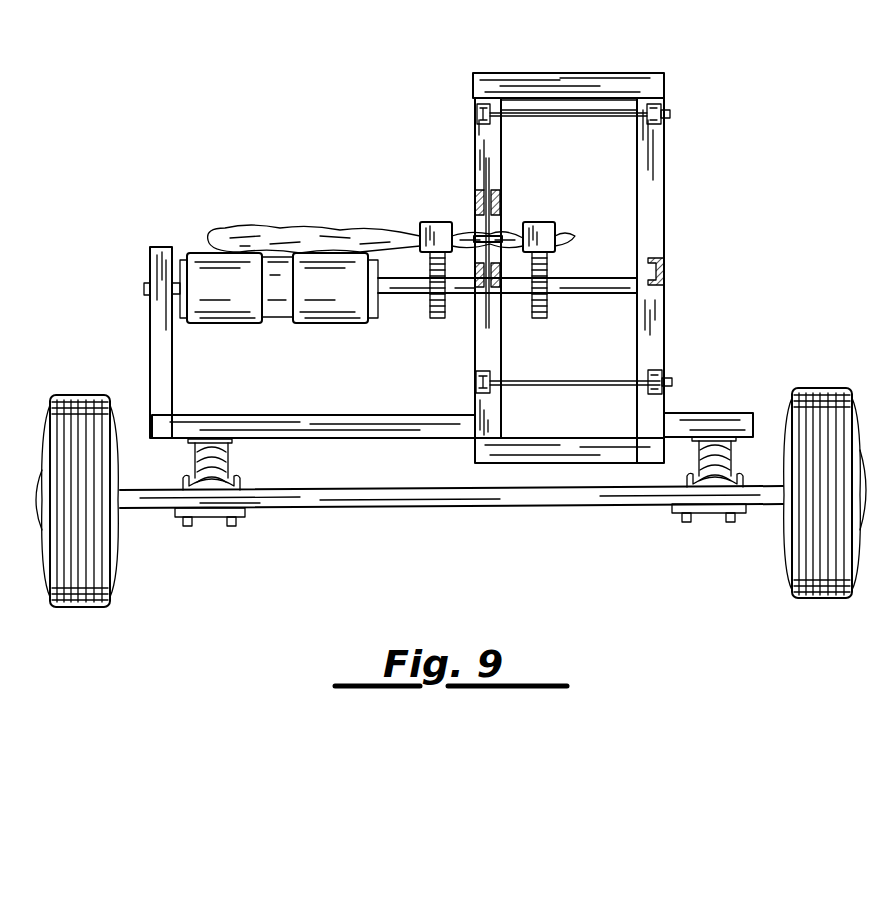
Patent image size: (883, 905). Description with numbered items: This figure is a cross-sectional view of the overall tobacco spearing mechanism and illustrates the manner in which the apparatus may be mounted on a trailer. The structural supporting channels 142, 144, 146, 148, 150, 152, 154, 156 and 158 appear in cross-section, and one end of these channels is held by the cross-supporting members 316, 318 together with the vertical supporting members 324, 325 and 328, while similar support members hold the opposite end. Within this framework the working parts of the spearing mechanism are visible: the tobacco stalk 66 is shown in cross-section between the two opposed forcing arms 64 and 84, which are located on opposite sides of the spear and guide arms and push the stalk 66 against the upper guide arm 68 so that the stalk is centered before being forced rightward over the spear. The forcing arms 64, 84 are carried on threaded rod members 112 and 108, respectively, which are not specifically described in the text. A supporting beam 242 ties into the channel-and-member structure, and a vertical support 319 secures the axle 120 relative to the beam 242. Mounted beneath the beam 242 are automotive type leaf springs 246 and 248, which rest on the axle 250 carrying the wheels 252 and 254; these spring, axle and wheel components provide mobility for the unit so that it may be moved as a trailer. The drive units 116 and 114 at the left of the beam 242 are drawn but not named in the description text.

The cross-supporting member 316 is at (558, 73).
The vertical supporting member 324 is at (475, 120).
The vertical supporting member 325 is at (476, 360).
The vertical supporting member 328 is at (664, 205).
The structural supporting channel 142 is at (477, 108).
The structural supporting channel 144 is at (661, 108).
The structural supporting channel 146 is at (476, 383).
The structural supporting channel 148 is at (664, 372).
The structural supporting channel 150 is at (692, 270).
The structural supporting channel 152 is at (478, 190).
The structural supporting channel 154 is at (497, 190).
The structural supporting channel 156 is at (476, 290).
The structural supporting channel 158 is at (500, 290).
The upper guide arm 68 is at (494, 232).
The tobacco stalk 66 is at (238, 225).
The forcing arm 84 is at (430, 222).
The forcing arm 64 is at (545, 222).
The left threaded rod 112 is at (428, 312).
The right threaded rod 108 is at (548, 312).
The vertical support 319 is at (150, 330).
The axle 120 is at (144, 290).
The motor housing 116 is at (228, 325).
The gear reducer housing 114 is at (328, 325).
The supporting beam 242 is at (300, 415).
The cross-supporting member 318 is at (482, 464).
The leaf spring 246 is at (232, 463).
The leaf spring 248 is at (698, 464).
The axle 250 is at (405, 508).
The wheel 252 is at (120, 570).
The wheel 254 is at (783, 563).